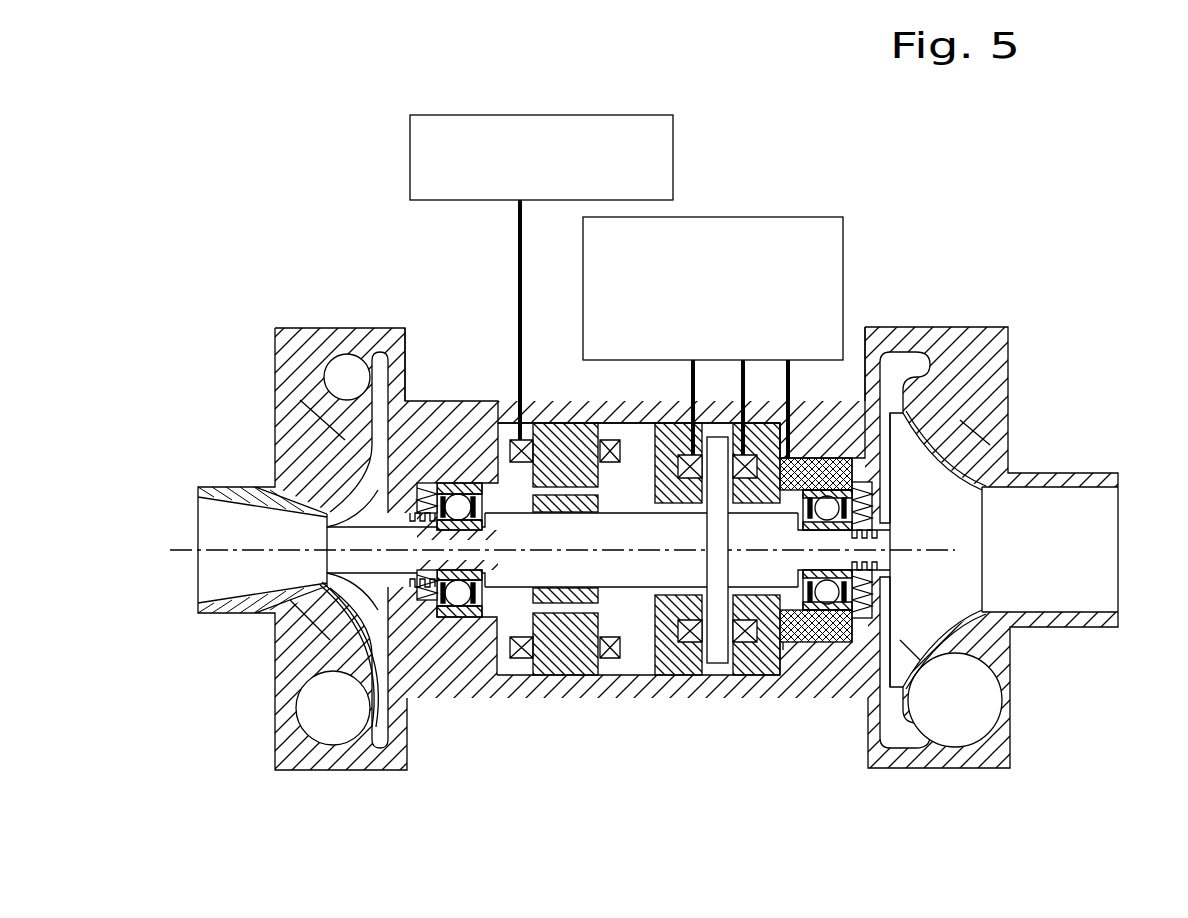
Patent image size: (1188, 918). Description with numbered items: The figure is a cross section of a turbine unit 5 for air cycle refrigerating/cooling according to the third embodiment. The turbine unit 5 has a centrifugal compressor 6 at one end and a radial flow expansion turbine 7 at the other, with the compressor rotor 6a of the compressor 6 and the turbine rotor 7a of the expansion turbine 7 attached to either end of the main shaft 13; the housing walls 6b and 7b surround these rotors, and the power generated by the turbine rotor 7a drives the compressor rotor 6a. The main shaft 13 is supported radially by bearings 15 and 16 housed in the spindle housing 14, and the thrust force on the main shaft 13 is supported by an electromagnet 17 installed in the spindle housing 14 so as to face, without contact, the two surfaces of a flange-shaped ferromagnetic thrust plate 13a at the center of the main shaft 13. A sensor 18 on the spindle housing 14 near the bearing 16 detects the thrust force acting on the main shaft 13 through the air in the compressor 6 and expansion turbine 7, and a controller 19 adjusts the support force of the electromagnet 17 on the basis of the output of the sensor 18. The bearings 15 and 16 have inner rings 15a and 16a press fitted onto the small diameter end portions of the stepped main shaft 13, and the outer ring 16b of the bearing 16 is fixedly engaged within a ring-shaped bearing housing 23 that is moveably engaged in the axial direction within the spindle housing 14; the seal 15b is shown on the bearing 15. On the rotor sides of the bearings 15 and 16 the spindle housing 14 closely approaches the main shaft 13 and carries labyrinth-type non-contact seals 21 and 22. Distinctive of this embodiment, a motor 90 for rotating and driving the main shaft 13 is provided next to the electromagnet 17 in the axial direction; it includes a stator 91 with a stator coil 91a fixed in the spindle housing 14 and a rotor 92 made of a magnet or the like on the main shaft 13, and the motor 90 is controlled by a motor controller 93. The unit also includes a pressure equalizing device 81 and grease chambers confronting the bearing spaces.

The turbine unit 5 is at (223, 193).
The centrifugal compressor 6 is at (465, 513).
The compressor rotor 6a is at (285, 612).
The first housing wall 6b is at (315, 457).
The radial flow expansion turbine 7 is at (1012, 582).
The turbine rotor 7a is at (912, 625).
The second housing wall 7b is at (970, 435).
The main shaft 13 is at (638, 572).
The thrust plate 13a is at (717, 667).
The spindle housing 14 is at (582, 401).
The bearing 15 is at (445, 556).
The inner ring 15a is at (453, 617).
The first bearing seal 15b is at (470, 617).
The bearing 16 is at (839, 520).
The inner ring 16a is at (810, 647).
The outer ring 16b is at (825, 575).
The electromagnet 17 is at (678, 665).
The sensor 18 is at (786, 645).
The controller 19 is at (765, 237).
The non-contact seal 21 is at (367, 600).
The non-contact seal 22 is at (893, 548).
The bearing housing 23 is at (838, 458).
The pressure equalizing device 81 is at (430, 480).
The motor 90 is at (543, 584).
The stator 91 is at (577, 653).
The stator coil 91a is at (512, 440).
The rotor 92 is at (558, 595).
The motor controller 93 is at (433, 167).